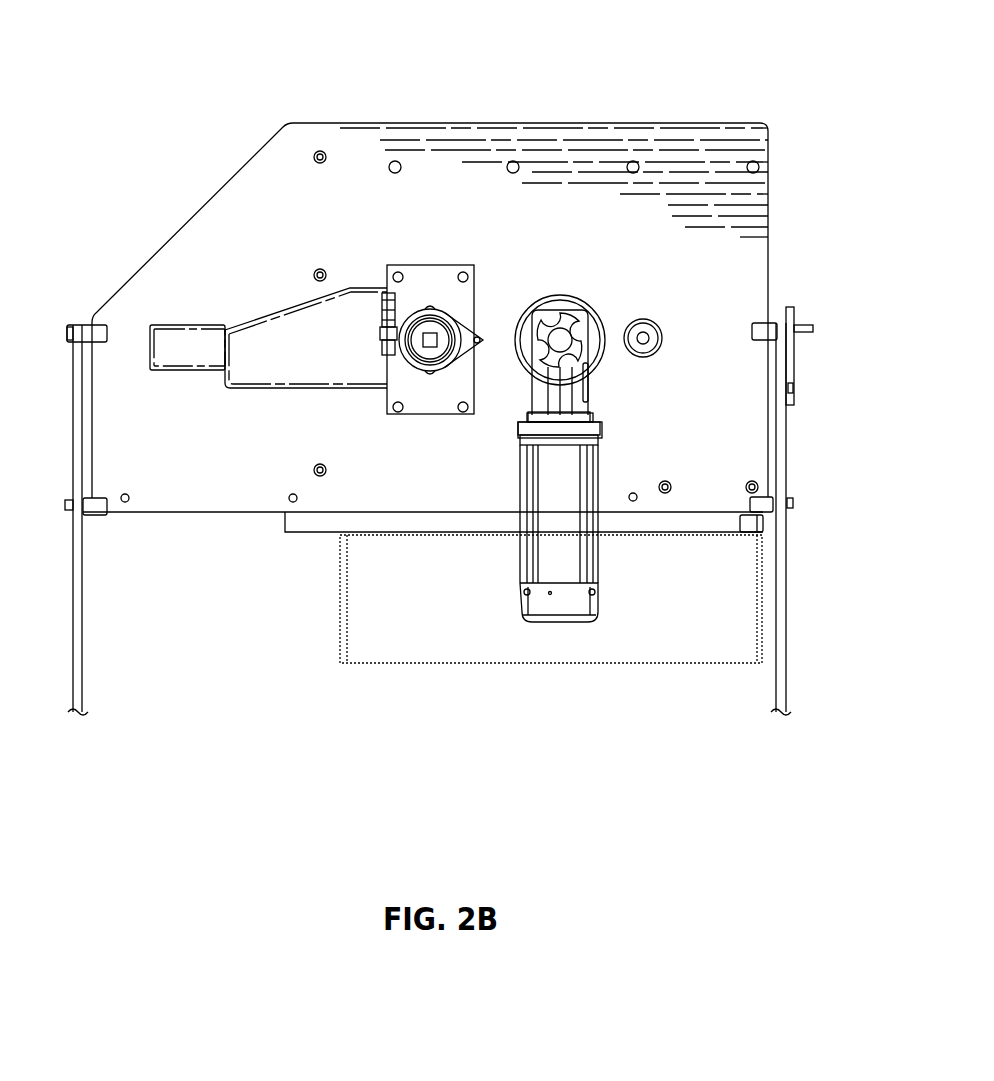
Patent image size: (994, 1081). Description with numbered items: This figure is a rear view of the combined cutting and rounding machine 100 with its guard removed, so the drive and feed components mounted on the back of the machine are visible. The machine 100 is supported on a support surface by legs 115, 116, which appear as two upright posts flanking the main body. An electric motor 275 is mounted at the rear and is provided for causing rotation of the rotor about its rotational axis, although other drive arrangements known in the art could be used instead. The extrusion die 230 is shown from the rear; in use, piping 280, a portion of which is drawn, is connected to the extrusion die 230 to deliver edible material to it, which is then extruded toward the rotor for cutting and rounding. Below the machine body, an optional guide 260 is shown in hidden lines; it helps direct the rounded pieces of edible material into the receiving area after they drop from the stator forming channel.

The combined cutting and rounding machine 100 is at (676, 96).
The leg 115 is at (83, 663).
The leg 116 is at (785, 627).
The extrusion die 230 is at (435, 328).
The guide 260 is at (365, 611).
The electric motor 275 is at (560, 532).
The piping 280 is at (418, 312).